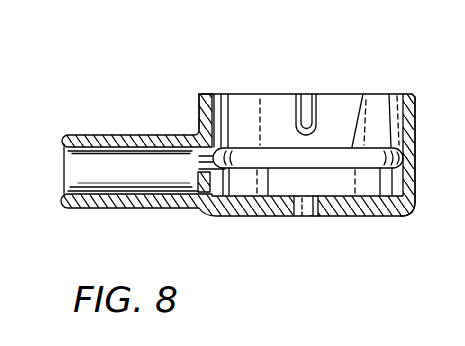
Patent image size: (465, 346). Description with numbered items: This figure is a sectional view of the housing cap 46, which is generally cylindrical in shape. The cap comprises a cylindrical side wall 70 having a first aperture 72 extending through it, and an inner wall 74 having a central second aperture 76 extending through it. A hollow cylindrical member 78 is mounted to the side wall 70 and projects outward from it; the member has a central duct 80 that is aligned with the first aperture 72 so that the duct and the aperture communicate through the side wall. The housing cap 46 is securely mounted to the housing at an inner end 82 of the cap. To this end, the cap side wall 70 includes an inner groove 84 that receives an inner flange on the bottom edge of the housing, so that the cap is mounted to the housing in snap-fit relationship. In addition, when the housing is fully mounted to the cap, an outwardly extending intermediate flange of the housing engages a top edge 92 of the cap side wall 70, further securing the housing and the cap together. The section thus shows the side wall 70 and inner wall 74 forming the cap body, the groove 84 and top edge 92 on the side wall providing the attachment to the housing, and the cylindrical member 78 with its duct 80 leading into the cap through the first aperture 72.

The housing cap 46 is at (415, 118).
The cylindrical side wall 70 is at (415, 143).
The first aperture 72 is at (196, 174).
The inner wall 74 is at (355, 217).
The second aperture 76 is at (303, 217).
The hollow cylindrical member 78 is at (108, 135).
The central duct 80 is at (86, 190).
The inner end 82 is at (410, 170).
The inner groove 84 is at (358, 93).
The top edge 92 is at (208, 93).